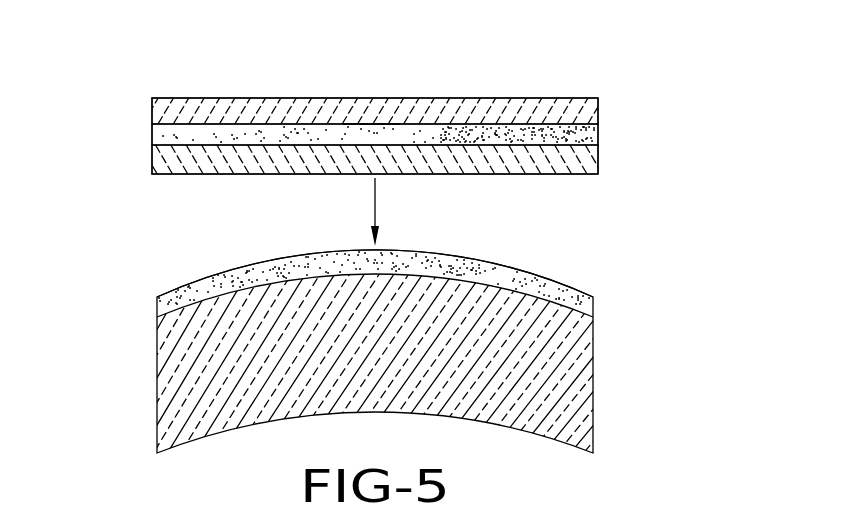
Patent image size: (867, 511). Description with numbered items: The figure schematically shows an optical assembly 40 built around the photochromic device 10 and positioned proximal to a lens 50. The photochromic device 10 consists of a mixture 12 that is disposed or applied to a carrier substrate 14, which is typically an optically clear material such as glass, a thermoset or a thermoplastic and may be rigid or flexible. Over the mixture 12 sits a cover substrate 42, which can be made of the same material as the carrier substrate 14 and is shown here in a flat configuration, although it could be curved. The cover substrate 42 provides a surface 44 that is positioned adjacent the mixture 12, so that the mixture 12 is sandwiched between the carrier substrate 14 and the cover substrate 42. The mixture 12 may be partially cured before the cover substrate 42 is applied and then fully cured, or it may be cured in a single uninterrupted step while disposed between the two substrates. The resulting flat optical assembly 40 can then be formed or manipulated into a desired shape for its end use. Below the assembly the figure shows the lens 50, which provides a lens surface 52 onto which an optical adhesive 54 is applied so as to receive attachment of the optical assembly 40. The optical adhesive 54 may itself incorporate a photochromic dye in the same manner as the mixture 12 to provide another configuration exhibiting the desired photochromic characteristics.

The optical assembly 40 is at (604, 78).
The cover substrate 42 is at (168, 95).
The surface 44 is at (343, 124).
The mixture 12 is at (149, 132).
The carrier substrate 14 is at (149, 173).
The photochromic device 10 is at (607, 123).
The lens 50 is at (155, 417).
The lens surface 52 is at (210, 297).
The optical adhesive 54 is at (525, 273).